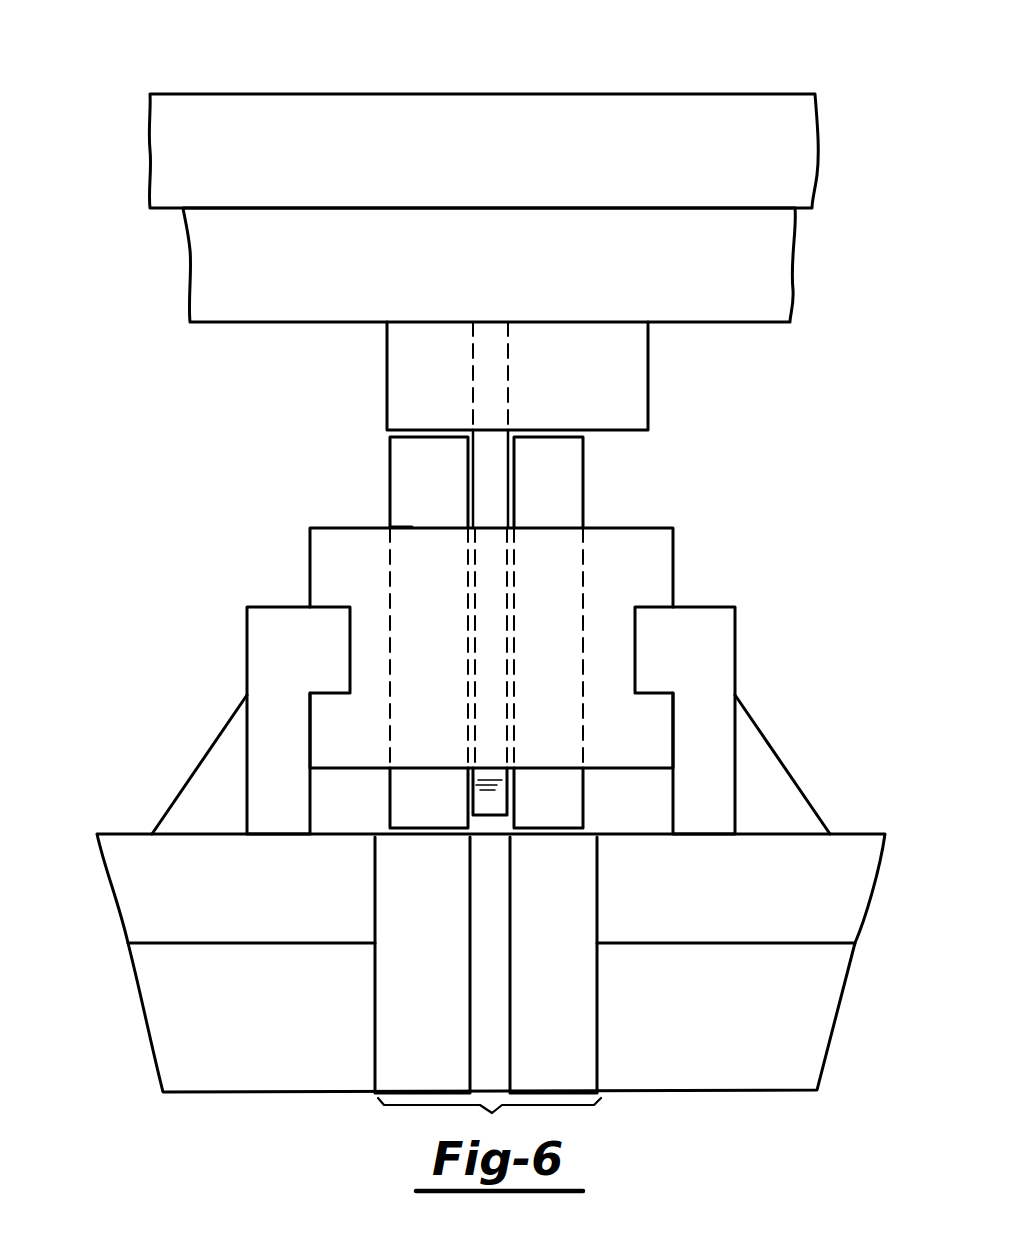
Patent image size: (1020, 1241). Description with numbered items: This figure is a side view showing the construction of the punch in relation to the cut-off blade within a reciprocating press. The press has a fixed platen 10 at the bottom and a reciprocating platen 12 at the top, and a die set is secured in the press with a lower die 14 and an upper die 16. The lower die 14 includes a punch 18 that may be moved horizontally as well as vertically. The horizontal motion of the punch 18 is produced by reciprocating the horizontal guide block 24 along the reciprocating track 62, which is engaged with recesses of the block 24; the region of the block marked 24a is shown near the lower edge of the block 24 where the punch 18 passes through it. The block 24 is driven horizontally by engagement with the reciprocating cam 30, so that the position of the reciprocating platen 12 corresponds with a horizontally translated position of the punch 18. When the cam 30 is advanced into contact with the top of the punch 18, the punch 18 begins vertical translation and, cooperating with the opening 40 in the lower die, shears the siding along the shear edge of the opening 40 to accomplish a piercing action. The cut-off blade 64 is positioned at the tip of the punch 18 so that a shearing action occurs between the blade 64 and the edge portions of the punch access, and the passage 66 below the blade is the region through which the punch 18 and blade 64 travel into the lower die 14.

The fixed platen 10 is at (695, 1055).
The reciprocating platen 12 is at (633, 138).
The lower die 14 is at (163, 907).
The upper die 16 is at (267, 288).
The punch 18 is at (553, 497).
The reciprocating horizontal guide block 24 is at (642, 567).
The stripper block bottom edge 24a is at (403, 527).
The reciprocating cam 30 is at (595, 368).
The opening 40 is at (617, 433).
The reciprocating track 62 is at (702, 652).
The cut-off blade 64 is at (492, 798).
The die hole 66 is at (493, 1037).